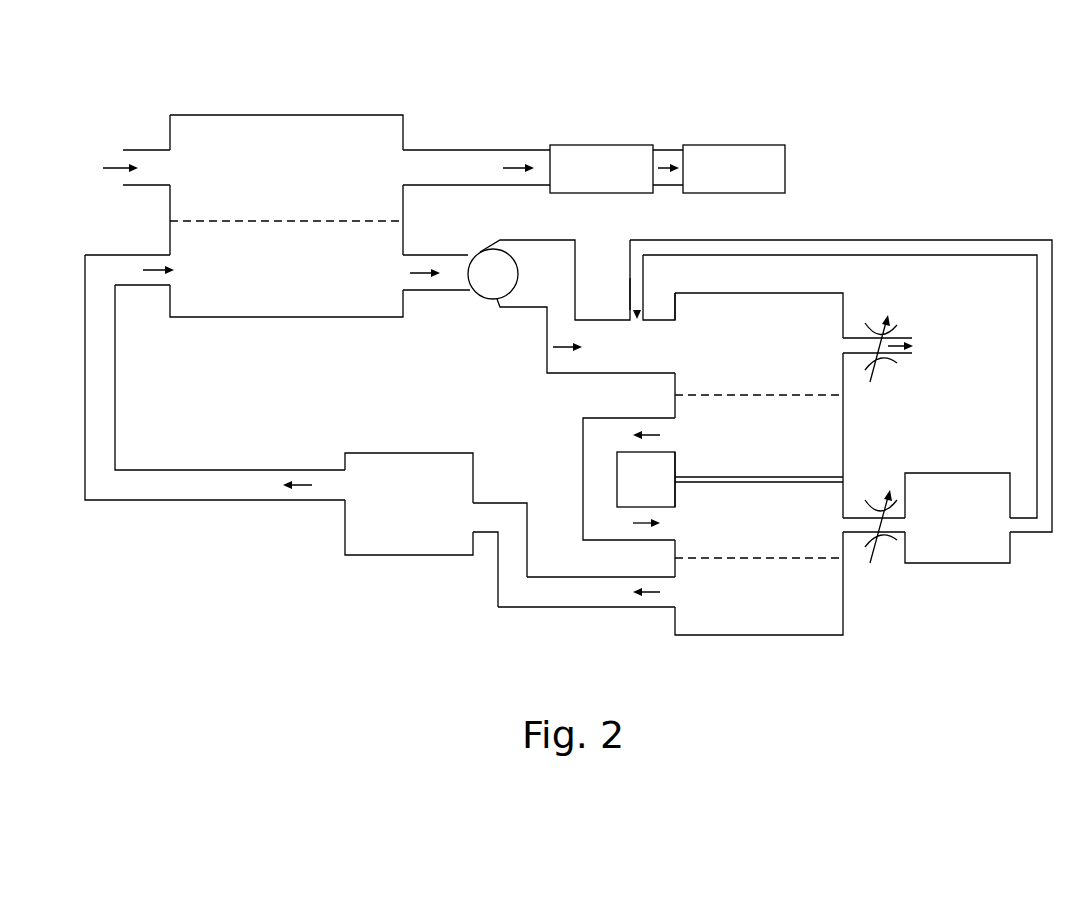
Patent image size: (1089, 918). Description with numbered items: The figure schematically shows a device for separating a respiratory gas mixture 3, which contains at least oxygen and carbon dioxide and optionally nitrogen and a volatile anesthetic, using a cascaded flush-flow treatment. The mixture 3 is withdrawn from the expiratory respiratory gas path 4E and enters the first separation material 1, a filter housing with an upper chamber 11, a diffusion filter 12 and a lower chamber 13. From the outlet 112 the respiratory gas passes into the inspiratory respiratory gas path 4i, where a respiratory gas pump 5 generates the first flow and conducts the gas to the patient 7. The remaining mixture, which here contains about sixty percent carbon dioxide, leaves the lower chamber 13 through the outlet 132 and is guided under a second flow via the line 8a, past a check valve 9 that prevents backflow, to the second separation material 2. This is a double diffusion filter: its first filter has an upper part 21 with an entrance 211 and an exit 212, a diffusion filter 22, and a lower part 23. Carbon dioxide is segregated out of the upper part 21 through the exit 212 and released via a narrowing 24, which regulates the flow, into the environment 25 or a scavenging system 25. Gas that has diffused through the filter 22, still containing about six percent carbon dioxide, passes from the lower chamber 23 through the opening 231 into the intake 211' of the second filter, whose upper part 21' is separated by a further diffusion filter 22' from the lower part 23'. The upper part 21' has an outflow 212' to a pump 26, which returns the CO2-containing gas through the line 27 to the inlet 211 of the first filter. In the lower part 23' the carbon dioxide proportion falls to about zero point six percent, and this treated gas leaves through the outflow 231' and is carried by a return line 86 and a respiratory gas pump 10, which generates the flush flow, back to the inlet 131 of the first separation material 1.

The first separation material 1 is at (195, 115).
The upper chamber 11 is at (365, 127).
The diffusion filter 12 is at (208, 222).
The lower chamber 13 is at (368, 277).
The inlet into the lower chamber 131 is at (157, 266).
The outlet for respiratory gas from the lower chamber 132 is at (428, 277).
The outlet for respiratory gas to the patient 112 is at (400, 167).
The respiratory gas mixture 3 is at (157, 157).
The expiratory respiratory gas path 4E is at (158, 160).
The inspiratory respiratory gas path 4i is at (543, 160).
The respiratory gas pump 5 is at (607, 163).
The patient 7 is at (733, 163).
The line 8a is at (525, 262).
The check valve 9 is at (480, 297).
The second separation material 2 is at (762, 295).
The upper chamber 21 is at (682, 259).
The entrance 211 is at (597, 364).
The inlet of the second filter 211' is at (596, 493).
The exit 212 is at (941, 286).
The outflow to a pump 212' is at (873, 491).
The diffusion filter 22 is at (763, 296).
The second separation stage 22' is at (768, 628).
The lower chamber 23 is at (792, 446).
The lower part of the second separation material 23' is at (742, 596).
The opening 231 is at (597, 479).
The outflow of the second filter 231' is at (590, 627).
The narrowing 24 is at (870, 370).
The environment 25 is at (965, 318).
The pump 26 is at (998, 552).
The line 27 is at (1027, 245).
The respiratory gas pump 10 is at (368, 538).
The return pipe 86 is at (528, 592).
The upper part 21' is at (871, 581).